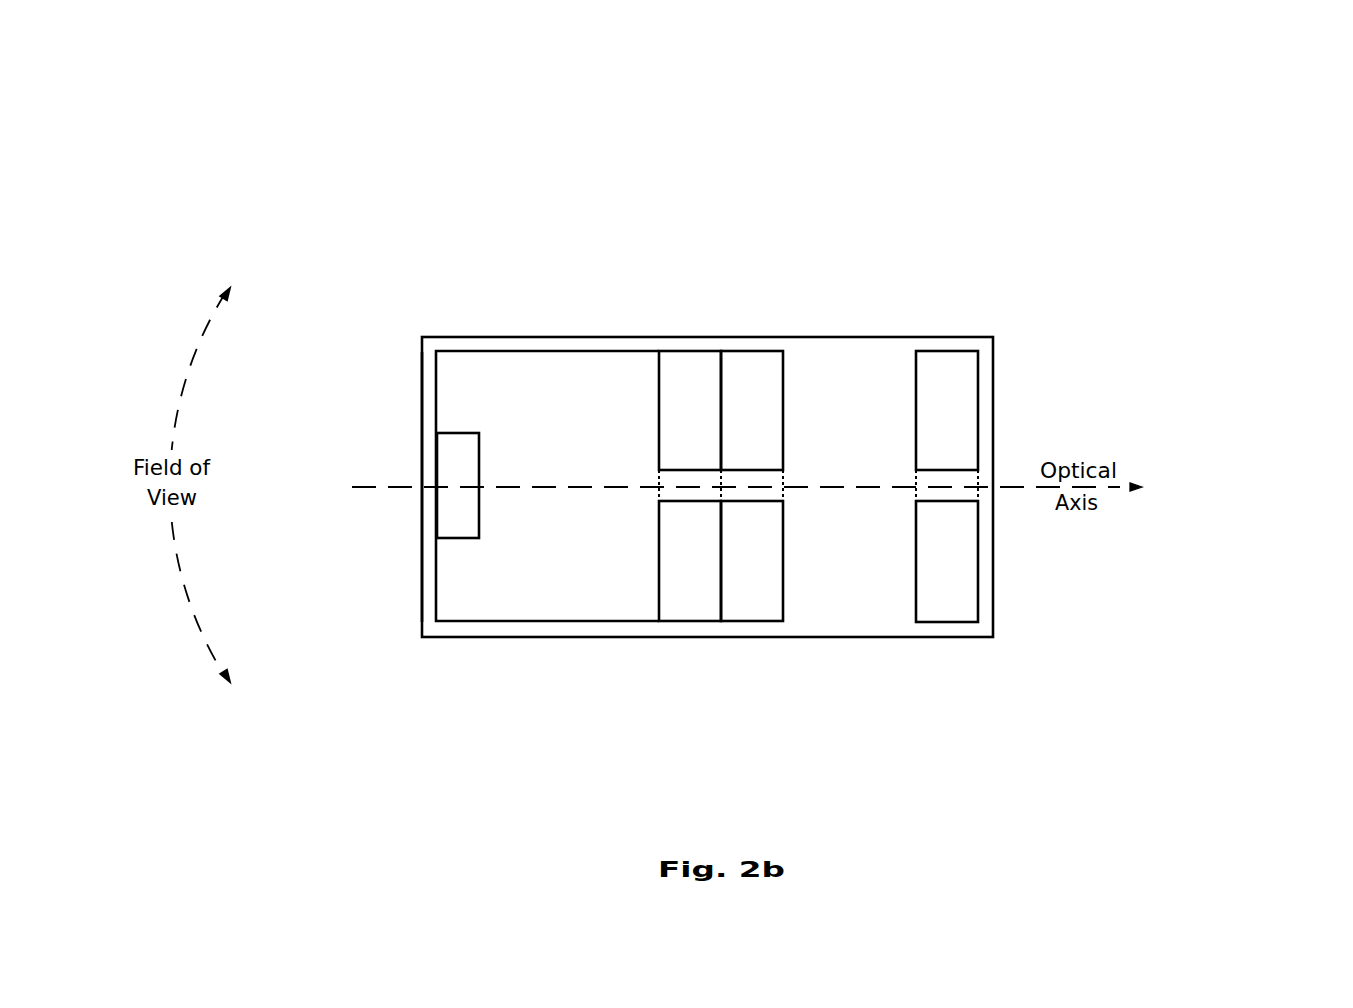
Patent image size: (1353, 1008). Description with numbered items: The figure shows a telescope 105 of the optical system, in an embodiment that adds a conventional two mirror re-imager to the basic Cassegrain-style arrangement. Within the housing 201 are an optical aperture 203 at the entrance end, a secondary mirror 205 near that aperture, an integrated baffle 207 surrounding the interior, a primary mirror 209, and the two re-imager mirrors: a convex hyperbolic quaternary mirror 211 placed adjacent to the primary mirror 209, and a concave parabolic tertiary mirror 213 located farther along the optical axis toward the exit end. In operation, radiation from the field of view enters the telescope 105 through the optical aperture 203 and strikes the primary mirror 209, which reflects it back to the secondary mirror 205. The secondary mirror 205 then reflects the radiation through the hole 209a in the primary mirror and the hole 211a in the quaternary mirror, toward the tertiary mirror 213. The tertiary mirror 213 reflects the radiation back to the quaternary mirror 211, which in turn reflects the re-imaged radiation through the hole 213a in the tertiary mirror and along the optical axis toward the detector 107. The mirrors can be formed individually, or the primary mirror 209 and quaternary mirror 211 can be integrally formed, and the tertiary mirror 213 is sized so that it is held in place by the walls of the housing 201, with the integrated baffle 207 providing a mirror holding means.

The telescope 105 is at (456, 173).
The detector 107 is at (1227, 486).
The housing 201 is at (993, 398).
The optical aperture 203 is at (410, 365).
The secondary mirror 205 is at (456, 551).
The integrated baffle 207 is at (567, 451).
The primary mirror 209 is at (610, 675).
The hole 209a is at (659, 492).
The quaternary mirror 211 is at (832, 675).
The hole 211a is at (783, 492).
The tertiary mirror 213 is at (972, 682).
The hole 213a is at (978, 492).